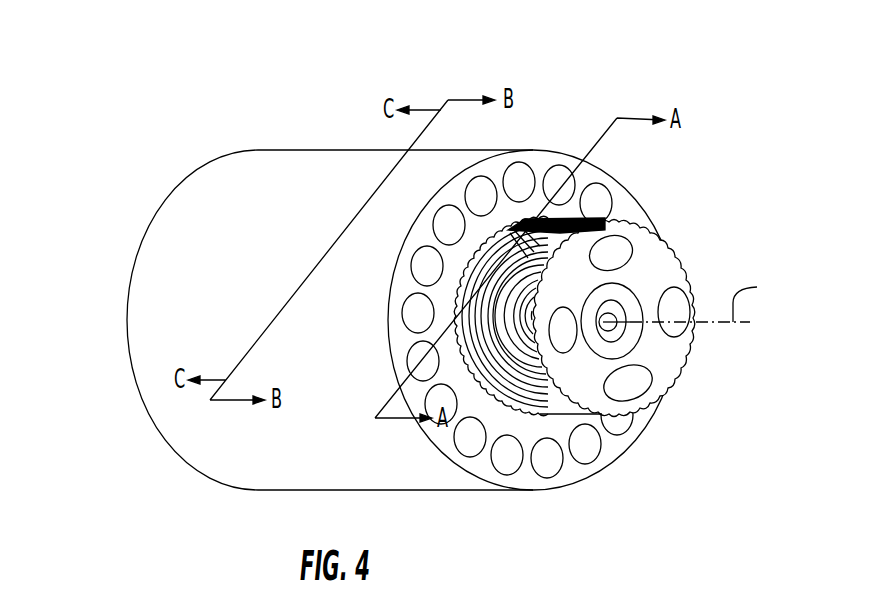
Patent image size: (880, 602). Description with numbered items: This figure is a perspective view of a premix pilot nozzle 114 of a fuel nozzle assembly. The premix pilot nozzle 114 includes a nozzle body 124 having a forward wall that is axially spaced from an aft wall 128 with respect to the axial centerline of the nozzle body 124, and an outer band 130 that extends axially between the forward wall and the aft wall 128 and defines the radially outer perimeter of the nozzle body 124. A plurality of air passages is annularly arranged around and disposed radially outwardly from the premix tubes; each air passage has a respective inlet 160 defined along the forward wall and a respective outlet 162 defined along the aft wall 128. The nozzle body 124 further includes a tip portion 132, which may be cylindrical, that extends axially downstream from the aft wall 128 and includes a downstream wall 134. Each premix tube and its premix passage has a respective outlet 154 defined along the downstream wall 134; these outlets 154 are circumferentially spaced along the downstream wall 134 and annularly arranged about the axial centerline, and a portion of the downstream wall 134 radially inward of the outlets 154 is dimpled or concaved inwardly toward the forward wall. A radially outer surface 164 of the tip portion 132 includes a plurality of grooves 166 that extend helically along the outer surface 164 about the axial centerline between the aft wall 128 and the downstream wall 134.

The premix pilot nozzle 114 is at (172, 86).
The nozzle body 124 is at (193, 198).
The outer band 130 is at (178, 313).
The aft wall 128 is at (620, 204).
The inlet 160 is at (513, 177).
The outlet 162 is at (483, 187).
The tip portion 132 is at (690, 257).
The downstream wall 134 is at (677, 360).
The outlet 154 is at (620, 247).
The radially outer surface 164 is at (527, 405).
The grooves 166 is at (565, 403).